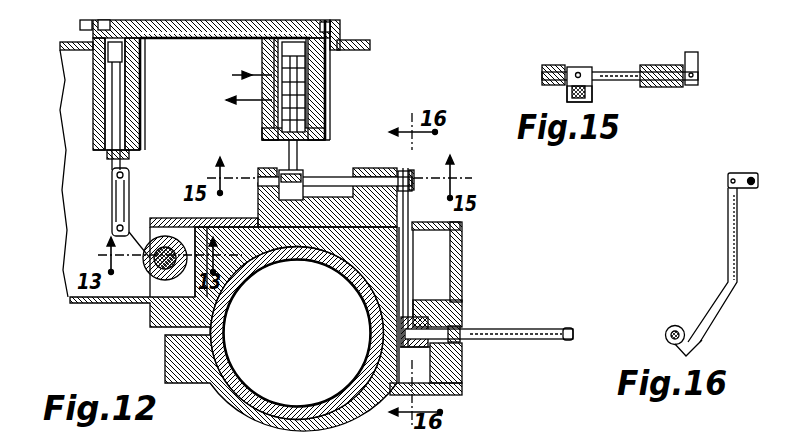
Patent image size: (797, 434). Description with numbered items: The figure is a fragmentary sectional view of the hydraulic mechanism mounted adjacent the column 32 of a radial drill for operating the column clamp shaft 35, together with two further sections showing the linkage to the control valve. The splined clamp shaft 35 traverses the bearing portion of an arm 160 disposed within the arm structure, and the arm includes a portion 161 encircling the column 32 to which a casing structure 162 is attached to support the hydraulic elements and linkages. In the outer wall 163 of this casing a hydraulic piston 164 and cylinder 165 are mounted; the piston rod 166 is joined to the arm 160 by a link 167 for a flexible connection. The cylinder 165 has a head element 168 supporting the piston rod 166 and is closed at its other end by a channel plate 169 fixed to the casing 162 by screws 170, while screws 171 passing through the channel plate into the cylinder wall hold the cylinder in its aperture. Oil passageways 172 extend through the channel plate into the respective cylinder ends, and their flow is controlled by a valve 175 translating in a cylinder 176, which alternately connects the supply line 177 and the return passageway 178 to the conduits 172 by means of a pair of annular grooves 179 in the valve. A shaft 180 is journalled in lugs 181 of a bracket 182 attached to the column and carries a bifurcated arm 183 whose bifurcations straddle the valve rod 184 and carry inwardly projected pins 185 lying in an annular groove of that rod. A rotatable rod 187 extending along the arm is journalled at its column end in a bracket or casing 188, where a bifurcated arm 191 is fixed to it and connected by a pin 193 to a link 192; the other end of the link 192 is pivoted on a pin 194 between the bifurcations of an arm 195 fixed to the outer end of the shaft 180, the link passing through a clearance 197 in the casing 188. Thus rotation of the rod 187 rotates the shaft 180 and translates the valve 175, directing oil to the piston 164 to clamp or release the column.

In FIG. 12, the column 32 is at (317, 399).
In FIG. 12, the column clamp shaft 35 is at (166, 262).
In FIG. 12, the arm 160 is at (142, 243).
In FIG. 12, the portion encircling the column 161 is at (410, 270).
In FIG. 12, the casing structure 162 is at (359, 54).
In FIG. 12, the outer wall 163 is at (177, 45).
In FIG. 12, the hydraulic piston 164 is at (137, 73).
In FIG. 12, the cylinder 165 is at (133, 113).
In FIG. 12, the piston rod 166 is at (131, 142).
In FIG. 12, the link 167 is at (124, 210).
In FIG. 12, the head element 168 is at (107, 140).
In FIG. 12, the channel plate 169 is at (82, 28).
In FIG. 12, the screws 170 is at (334, 29).
In FIG. 12, the screws 171 is at (75, 69).
In FIG. 12, the oil passageways 172 is at (244, 56).
In FIG. 12, the valve 175 is at (322, 126).
In FIG. 12, the cylinder 176 is at (322, 103).
In FIG. 12, the pressure or supply line 177 is at (246, 85).
In FIG. 12, the exhaust or fluid return passageway 178 is at (256, 104).
In FIG. 12, the annular grooves 179 is at (322, 80).
In FIG. 12, the shaft 180 is at (343, 169).
In FIG. 15, the shaft 180 is at (616, 72).
In FIG. 16, the shaft 180 is at (758, 190).
In FIG. 12, the lugs 181 is at (264, 172).
In FIG. 15, the lugs 181 is at (553, 65).
In FIG. 12, the bracket 182 is at (258, 205).
In FIG. 12, the bifurcated arm 183 is at (297, 178).
In FIG. 15, the bifurcated arm 183 is at (579, 67).
In FIG. 12, the rod 184 is at (297, 163).
In FIG. 15, the rod 184 is at (582, 98).
In FIG. 15, the pins 185 is at (572, 92).
In FIG. 12, the rotatable rod 187 is at (508, 330).
In FIG. 16, the rotatable rod 187 is at (665, 337).
In FIG. 12, the bracket or casing 188 is at (462, 297).
In FIG. 12, the arm 191 is at (452, 347).
In FIG. 16, the arm 191 is at (690, 328).
In FIG. 12, the link 192 is at (395, 283).
In FIG. 16, the link 192 is at (728, 277).
In FIG. 16, the pin 193 is at (700, 342).
In FIG. 16, the pin 194 is at (728, 186).
In FIG. 12, the arm 195 is at (411, 170).
In FIG. 16, the arm 195 is at (748, 176).
In FIG. 12, the clearance 197 is at (450, 226).